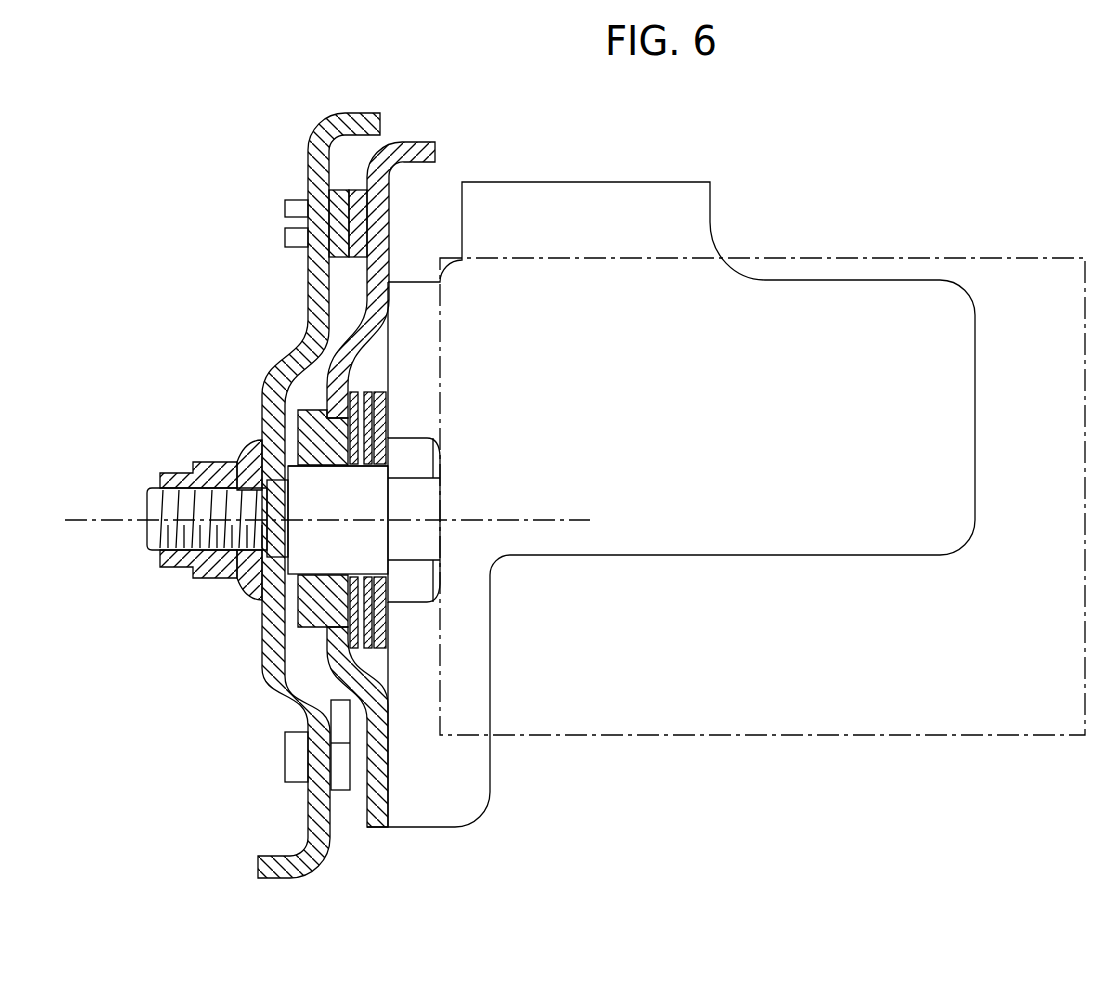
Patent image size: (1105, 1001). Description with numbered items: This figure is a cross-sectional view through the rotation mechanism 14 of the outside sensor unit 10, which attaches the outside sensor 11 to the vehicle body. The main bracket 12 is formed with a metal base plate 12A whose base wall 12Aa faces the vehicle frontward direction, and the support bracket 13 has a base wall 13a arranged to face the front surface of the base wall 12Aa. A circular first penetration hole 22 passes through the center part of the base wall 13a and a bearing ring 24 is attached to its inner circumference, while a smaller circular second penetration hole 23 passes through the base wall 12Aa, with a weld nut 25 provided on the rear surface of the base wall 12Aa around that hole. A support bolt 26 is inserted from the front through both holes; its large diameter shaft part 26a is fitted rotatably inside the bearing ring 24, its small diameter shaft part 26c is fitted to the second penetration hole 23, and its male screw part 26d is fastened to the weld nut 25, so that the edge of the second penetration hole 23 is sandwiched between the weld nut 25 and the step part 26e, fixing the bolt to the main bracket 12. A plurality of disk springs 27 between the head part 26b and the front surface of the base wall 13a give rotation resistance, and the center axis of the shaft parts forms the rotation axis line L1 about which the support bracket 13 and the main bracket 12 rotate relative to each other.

The outside sensor unit 10 is at (772, 174).
The outside sensor 11 is at (858, 740).
The main bracket 12 is at (306, 150).
The base plate 12A is at (327, 878).
The base wall 12Aa is at (262, 675).
The support bracket 13 is at (418, 137).
The base wall 13a is at (383, 720).
The rotation mechanism 14 is at (404, 426).
The first penetration hole 22 is at (372, 600).
The second penetration hole 23 is at (250, 468).
The bearing ring 24 is at (330, 627).
The weld nut 25 is at (195, 580).
The support bolt 26 is at (449, 585).
The large diameter shaft part 26a is at (316, 466).
The head part 26b is at (445, 548).
The small diameter shaft part 26c is at (224, 415).
The male screw part 26d is at (172, 470).
The step part 26e is at (246, 585).
The disk springs 27 is at (380, 392).
The rotation axis line L1 is at (75, 522).